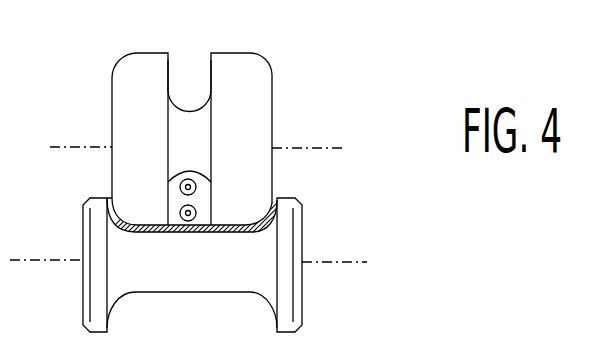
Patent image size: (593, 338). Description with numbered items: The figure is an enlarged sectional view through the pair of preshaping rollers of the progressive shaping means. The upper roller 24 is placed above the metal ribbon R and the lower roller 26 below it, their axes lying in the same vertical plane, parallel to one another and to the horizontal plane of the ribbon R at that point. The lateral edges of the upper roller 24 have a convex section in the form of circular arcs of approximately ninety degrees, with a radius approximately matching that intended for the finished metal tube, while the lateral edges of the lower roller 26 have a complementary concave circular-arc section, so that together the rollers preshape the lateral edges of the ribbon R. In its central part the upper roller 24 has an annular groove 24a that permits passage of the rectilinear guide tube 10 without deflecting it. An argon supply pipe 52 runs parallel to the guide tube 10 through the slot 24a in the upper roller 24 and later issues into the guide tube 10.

The upper roller 24 is at (245, 62).
The annular groove 24a is at (170, 70).
The guide tube 10 is at (185, 178).
The supply pipe 52 is at (180, 213).
The lower roller 26 is at (130, 276).
The ribbon R is at (235, 224).